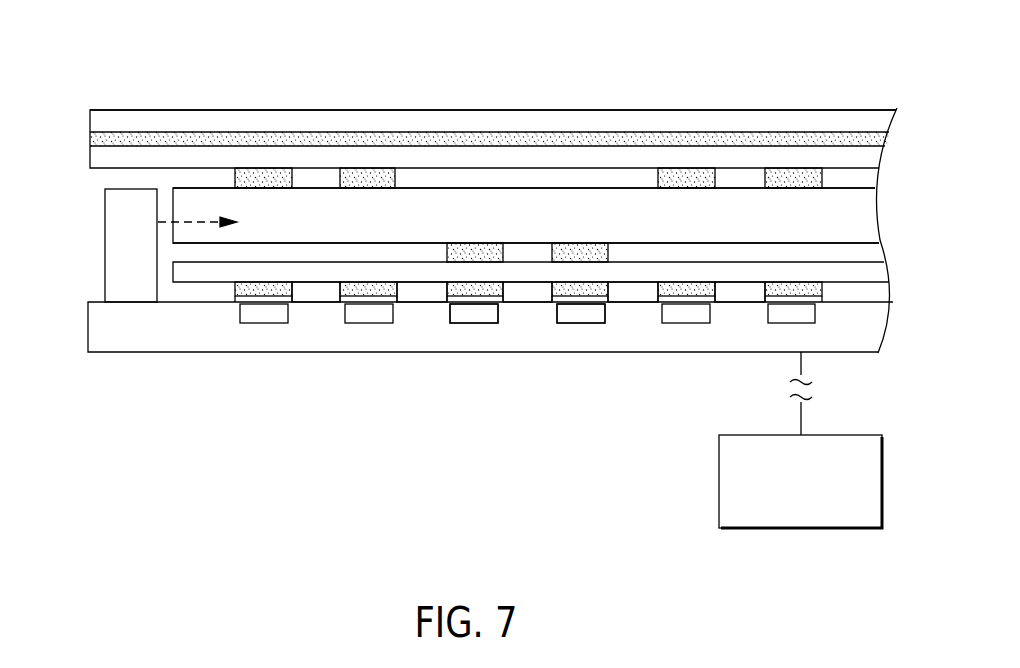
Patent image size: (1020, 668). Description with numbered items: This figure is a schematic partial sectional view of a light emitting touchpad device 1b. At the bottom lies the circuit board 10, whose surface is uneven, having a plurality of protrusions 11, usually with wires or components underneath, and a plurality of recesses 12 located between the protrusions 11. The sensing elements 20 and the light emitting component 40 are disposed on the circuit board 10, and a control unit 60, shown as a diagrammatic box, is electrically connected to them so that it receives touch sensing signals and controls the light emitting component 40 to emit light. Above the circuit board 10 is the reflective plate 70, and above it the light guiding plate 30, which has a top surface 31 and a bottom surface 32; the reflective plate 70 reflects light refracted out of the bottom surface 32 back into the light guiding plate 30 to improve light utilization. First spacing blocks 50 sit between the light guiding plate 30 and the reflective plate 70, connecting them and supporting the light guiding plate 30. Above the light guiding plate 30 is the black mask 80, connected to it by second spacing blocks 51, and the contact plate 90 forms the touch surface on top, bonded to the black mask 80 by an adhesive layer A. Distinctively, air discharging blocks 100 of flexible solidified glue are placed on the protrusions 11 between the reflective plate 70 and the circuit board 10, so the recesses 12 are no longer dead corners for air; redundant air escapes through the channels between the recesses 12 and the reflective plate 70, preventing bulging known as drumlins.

The light emitting touchpad device 1b is at (122, 75).
The circuit board 10 is at (158, 346).
The protrusions 11 is at (260, 299).
The recesses 12 is at (310, 302).
The sensing elements 20 is at (490, 317).
The light guiding plate 30 is at (847, 223).
The top surface of light guiding plate 31 is at (858, 188).
The bottom surface of light guiding plate 32 is at (875, 240).
The light emitting component 40 is at (107, 233).
The first spacing blocks 50 is at (468, 257).
The second spacing blocks 51 is at (383, 178).
The control unit 60 is at (800, 440).
The reflective plate 70 is at (625, 272).
The black mask 80 is at (100, 158).
The contact plate 90 is at (193, 127).
The air discharging blocks 100 is at (363, 287).
The adhesive layer A is at (272, 141).